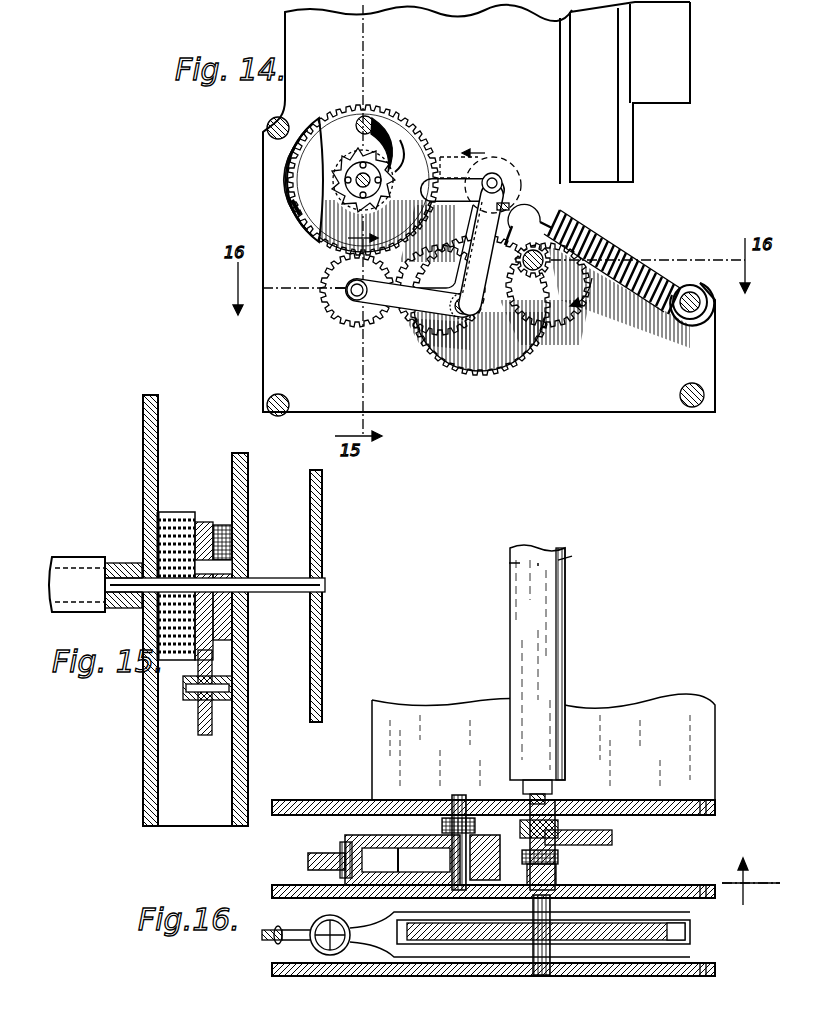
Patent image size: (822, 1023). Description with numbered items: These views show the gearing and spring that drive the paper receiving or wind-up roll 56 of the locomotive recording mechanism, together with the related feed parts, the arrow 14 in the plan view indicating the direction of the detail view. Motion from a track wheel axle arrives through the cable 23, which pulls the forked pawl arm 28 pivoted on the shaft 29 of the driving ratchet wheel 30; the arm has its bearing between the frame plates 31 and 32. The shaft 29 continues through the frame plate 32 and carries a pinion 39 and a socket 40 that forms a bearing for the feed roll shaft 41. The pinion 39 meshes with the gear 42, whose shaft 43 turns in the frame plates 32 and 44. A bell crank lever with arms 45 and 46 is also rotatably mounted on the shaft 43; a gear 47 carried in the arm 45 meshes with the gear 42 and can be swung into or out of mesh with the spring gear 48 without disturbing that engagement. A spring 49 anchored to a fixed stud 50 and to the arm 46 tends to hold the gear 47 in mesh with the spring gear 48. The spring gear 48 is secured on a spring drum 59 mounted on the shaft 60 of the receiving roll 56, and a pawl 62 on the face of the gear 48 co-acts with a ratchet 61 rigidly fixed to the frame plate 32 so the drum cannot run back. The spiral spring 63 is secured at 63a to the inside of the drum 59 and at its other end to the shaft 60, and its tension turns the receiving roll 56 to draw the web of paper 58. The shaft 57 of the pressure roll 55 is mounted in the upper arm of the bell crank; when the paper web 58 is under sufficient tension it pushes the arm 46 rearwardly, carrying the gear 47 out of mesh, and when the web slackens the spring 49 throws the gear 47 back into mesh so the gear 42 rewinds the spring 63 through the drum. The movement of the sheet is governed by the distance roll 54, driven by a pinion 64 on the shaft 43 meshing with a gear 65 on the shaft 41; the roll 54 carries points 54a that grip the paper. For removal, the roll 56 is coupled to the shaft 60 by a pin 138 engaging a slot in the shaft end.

In FIG. 16, the section line 14 is at (751, 881).
In FIG. 16, the cable 23 is at (276, 928).
In FIG. 16, the pawl arm 28 is at (262, 935).
In FIG. 16, the shaft 29 is at (540, 977).
In FIG. 16, the driving ratchet wheel 30 is at (622, 929).
In FIG. 15, the frame plate 31 is at (316, 723).
In FIG. 16, the frame plate 31 is at (618, 977).
In FIG. 15, the frame plate 32 is at (248, 752).
In FIG. 16, the frame plate 32 is at (626, 886).
In FIG. 14, the pinion 39 is at (548, 305).
In FIG. 16, the pinion 39 is at (558, 858).
In FIG. 16, the socket 40 is at (558, 876).
In FIG. 16, the feed roll shaft 41 is at (558, 838).
In FIG. 14, the gear 42 is at (410, 332).
In FIG. 16, the gear 42 is at (495, 855).
In FIG. 14, the shaft 43 is at (480, 305).
In FIG. 16, the shaft 43 is at (460, 797).
In FIG. 15, the frame plate 44 is at (157, 770).
In FIG. 16, the frame plate 44 is at (628, 800).
In FIG. 14, the arm of bell crank lever 45 is at (455, 305).
In FIG. 16, the arm of bell crank lever 45 is at (390, 845).
In FIG. 14, the arm of bell crank lever 46 is at (462, 247).
In FIG. 14, the gear 47 is at (333, 290).
In FIG. 15, the gear 47 is at (206, 735).
In FIG. 16, the gear 47 is at (306, 858).
In FIG. 14, the spring gear 48 is at (350, 202).
In FIG. 15, the spring gear 48 is at (205, 522).
In FIG. 14, the spring 49 is at (655, 284).
In FIG. 14, the fixed stud 50 is at (684, 320).
In FIG. 16, the feed roll 54 is at (537, 674).
In FIG. 16, the points 54a is at (566, 565).
In FIG. 14, the pressure roll 55 is at (500, 178).
In FIG. 14, the receiving roll 56 is at (514, 190).
In FIG. 15, the receiving roll 56 is at (112, 557).
In FIG. 14, the shaft of pressure roll 57 is at (500, 181).
In FIG. 14, the web of paper 58 is at (453, 156).
In FIG. 14, the spring drum 59 is at (397, 107).
In FIG. 15, the spring drum 59 is at (180, 512).
In FIG. 14, the shaft 60 is at (366, 181).
In FIG. 15, the shaft 60 is at (267, 582).
In FIG. 14, the ratchet 61 is at (363, 199).
In FIG. 15, the ratchet 61 is at (238, 634).
In FIG. 14, the pawl 62 is at (370, 117).
In FIG. 15, the pawl 62 is at (222, 525).
In FIG. 14, the spiral spring 63 is at (308, 172).
In FIG. 15, the spiral spring 63 is at (165, 512).
In FIG. 14, the spring attachment point 63a is at (294, 203).
In FIG. 16, the pinion 64 is at (442, 826).
In FIG. 16, the gear 65 is at (614, 838).
In FIG. 15, the pin 138 is at (142, 563).